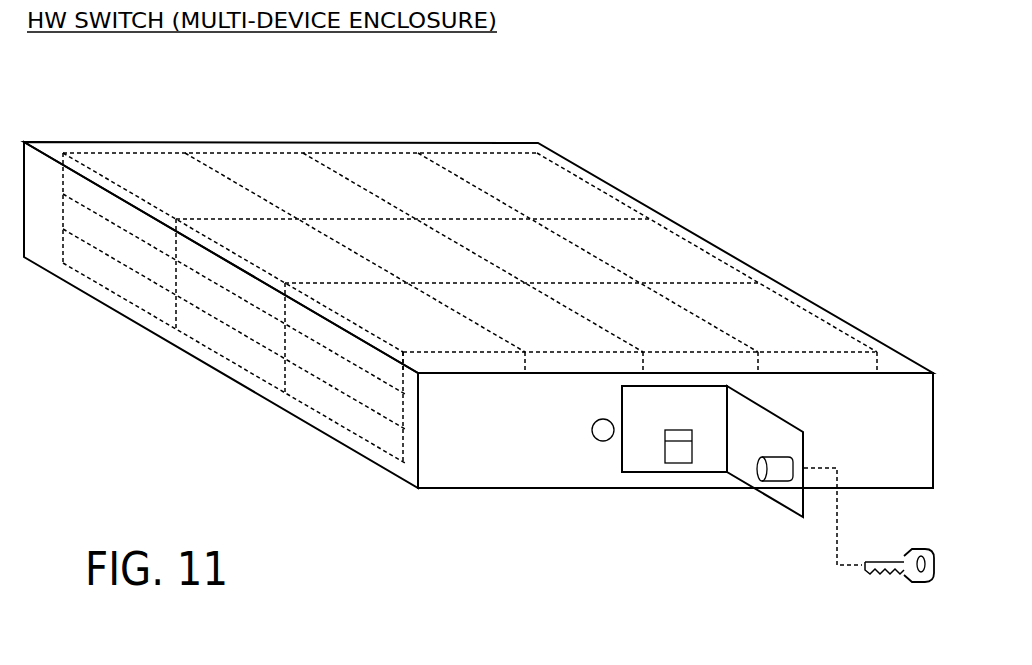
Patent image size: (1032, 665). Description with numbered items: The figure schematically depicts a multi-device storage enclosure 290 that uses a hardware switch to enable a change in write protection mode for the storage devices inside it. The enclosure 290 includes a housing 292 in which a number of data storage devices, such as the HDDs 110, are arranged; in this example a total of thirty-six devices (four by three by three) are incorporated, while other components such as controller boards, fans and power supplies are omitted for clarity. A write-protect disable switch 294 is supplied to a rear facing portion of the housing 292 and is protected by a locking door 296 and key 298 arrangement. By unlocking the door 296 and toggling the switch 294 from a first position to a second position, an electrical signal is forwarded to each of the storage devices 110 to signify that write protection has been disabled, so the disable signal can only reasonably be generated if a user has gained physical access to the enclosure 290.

The multi-device storage enclosure 290 is at (152, 115).
The HDDs 110 is at (665, 258).
The housing 292 is at (737, 257).
The write-protect disable switch (WPDS) 294 is at (665, 436).
The locking door 296 is at (777, 474).
The key 298 is at (907, 575).